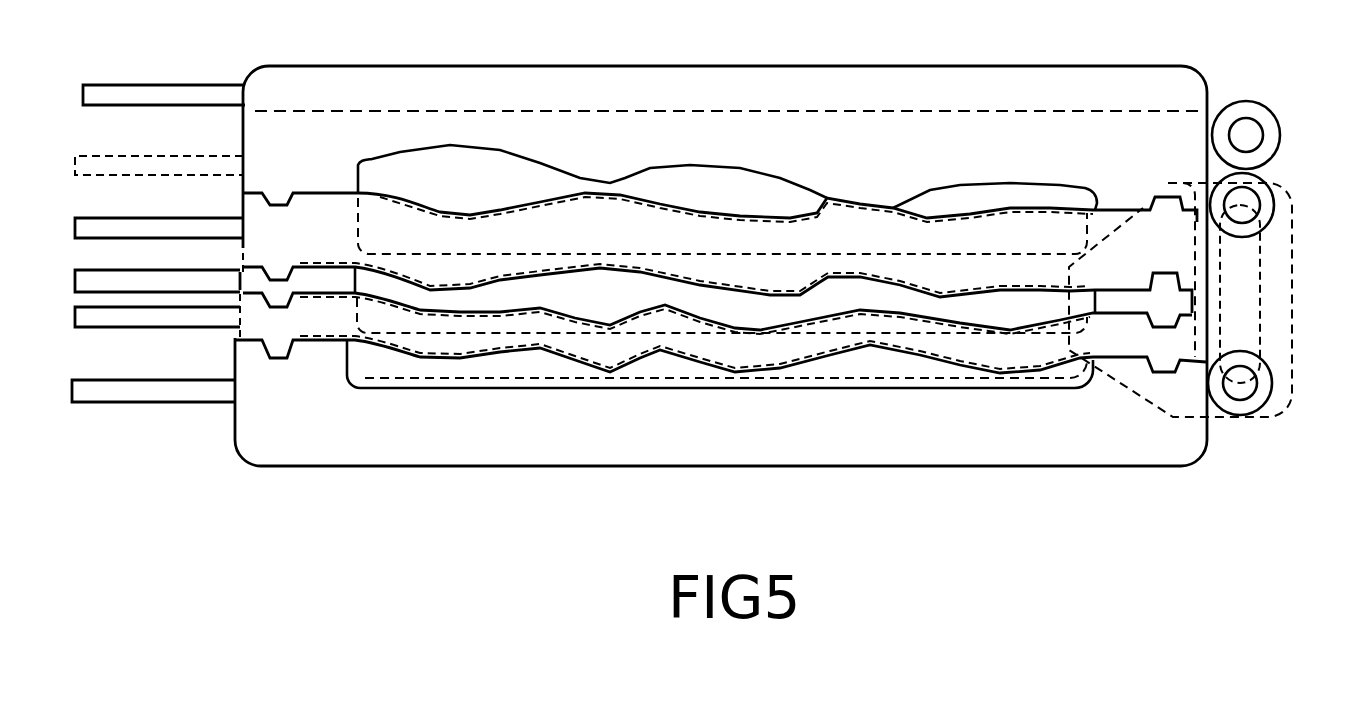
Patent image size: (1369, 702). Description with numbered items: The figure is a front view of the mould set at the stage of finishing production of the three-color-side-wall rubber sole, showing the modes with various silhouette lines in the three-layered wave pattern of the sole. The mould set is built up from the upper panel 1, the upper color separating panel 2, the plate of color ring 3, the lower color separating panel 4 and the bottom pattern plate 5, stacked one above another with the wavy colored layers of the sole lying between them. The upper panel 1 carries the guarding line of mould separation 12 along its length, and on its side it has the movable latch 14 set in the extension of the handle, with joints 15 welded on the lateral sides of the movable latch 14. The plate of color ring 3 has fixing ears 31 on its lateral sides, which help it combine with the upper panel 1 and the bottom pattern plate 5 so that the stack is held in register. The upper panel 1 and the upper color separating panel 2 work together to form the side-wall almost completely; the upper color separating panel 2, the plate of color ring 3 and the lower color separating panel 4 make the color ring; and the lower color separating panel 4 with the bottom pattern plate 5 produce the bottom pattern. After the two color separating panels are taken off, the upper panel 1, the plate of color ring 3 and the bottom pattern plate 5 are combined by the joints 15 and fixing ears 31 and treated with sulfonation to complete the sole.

The upper panel 1 is at (707, 84).
The guarding line of mould separation 12 is at (655, 110).
The upper color separating panel 2 is at (258, 223).
The plate of color ring 3 is at (252, 280).
The lower color separating panel 4 is at (250, 327).
The bottom pattern plate 5 is at (272, 438).
The movable latch 14 is at (1250, 101).
The joints 15 is at (1283, 190).
The fixing ears 31 is at (1281, 268).